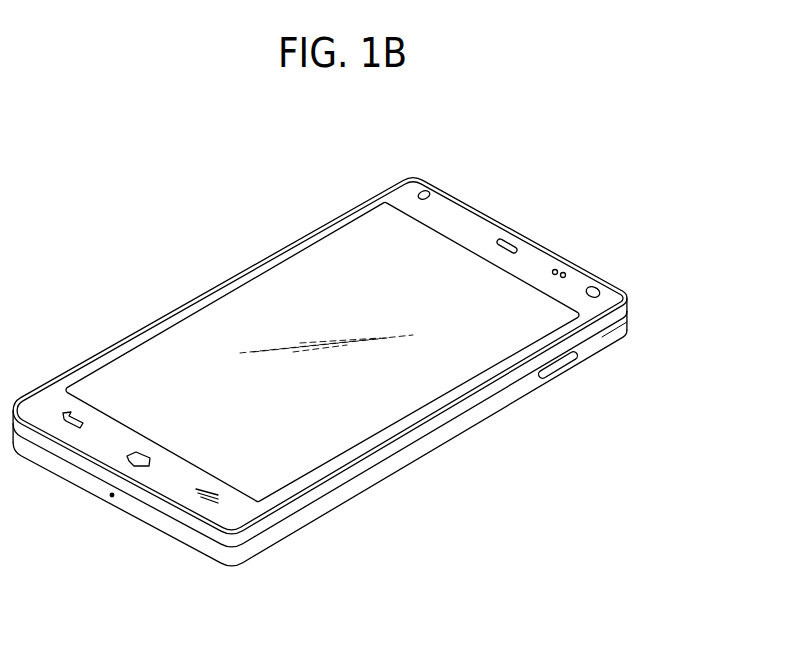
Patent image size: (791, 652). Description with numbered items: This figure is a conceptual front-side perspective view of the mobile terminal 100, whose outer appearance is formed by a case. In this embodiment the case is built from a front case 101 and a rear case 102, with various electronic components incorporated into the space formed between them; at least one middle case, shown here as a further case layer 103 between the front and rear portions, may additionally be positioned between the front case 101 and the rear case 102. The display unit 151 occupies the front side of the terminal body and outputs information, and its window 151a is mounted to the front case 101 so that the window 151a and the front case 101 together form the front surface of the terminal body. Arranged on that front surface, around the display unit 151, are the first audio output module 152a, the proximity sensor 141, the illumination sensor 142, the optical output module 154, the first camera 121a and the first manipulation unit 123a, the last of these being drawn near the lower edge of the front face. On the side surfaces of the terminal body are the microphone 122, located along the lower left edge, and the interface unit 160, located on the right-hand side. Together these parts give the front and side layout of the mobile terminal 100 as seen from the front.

The mobile terminal 100 is at (219, 252).
The front case 101 is at (623, 312).
The rear case 102 is at (622, 328).
The rear case 103 is at (617, 343).
The display unit 151 is at (198, 340).
The window 151a is at (350, 257).
The optical output module 154 is at (431, 192).
The first audio output module 152a is at (507, 243).
The illumination sensor 142 is at (556, 270).
The proximity sensor 141 is at (565, 273).
The first camera 121a is at (598, 289).
The interface unit 160 is at (558, 367).
The microphone 122 is at (111, 496).
The first manipulation unit 123a is at (197, 495).